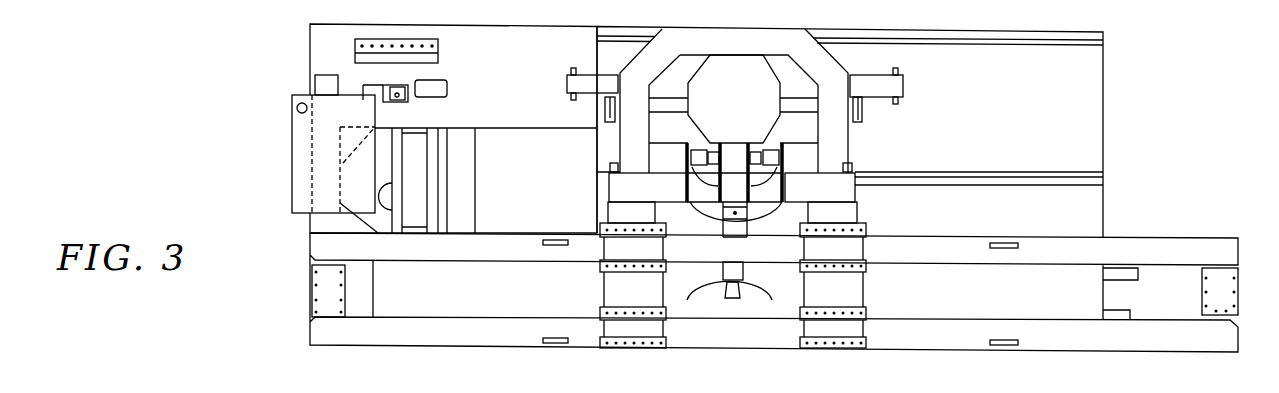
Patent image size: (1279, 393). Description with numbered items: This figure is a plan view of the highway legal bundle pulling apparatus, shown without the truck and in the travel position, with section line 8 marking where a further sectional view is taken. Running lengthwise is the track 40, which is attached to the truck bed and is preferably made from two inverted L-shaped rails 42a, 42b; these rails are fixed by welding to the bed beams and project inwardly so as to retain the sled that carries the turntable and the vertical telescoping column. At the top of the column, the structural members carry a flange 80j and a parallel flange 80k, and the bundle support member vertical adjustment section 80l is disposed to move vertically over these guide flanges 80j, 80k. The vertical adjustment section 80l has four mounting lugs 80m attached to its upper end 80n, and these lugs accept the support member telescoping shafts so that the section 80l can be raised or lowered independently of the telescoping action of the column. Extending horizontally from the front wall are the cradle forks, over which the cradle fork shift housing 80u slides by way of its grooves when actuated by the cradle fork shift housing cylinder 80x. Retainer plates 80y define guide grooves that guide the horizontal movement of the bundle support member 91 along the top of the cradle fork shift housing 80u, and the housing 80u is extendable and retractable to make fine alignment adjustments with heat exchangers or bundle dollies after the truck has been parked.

The track 40 is at (1024, 27).
The inverted L-shaped rail 42a is at (998, 172).
The inverted L-shaped rail 42b is at (1003, 48).
The flange 80j is at (614, 167).
The flange 80k is at (838, 168).
The bundle support member vertical adjustment section 80l is at (880, 207).
The mounting lugs 80m is at (783, 189).
The upper end 80n is at (640, 192).
The cradle fork shift housing 80u is at (840, 288).
The cradle fork shift housing cylinder 80x is at (720, 275).
The retainer plates 80y is at (600, 298).
The bundle support member 91 is at (1175, 343).
The section line 8- 8 is at (956, 372).